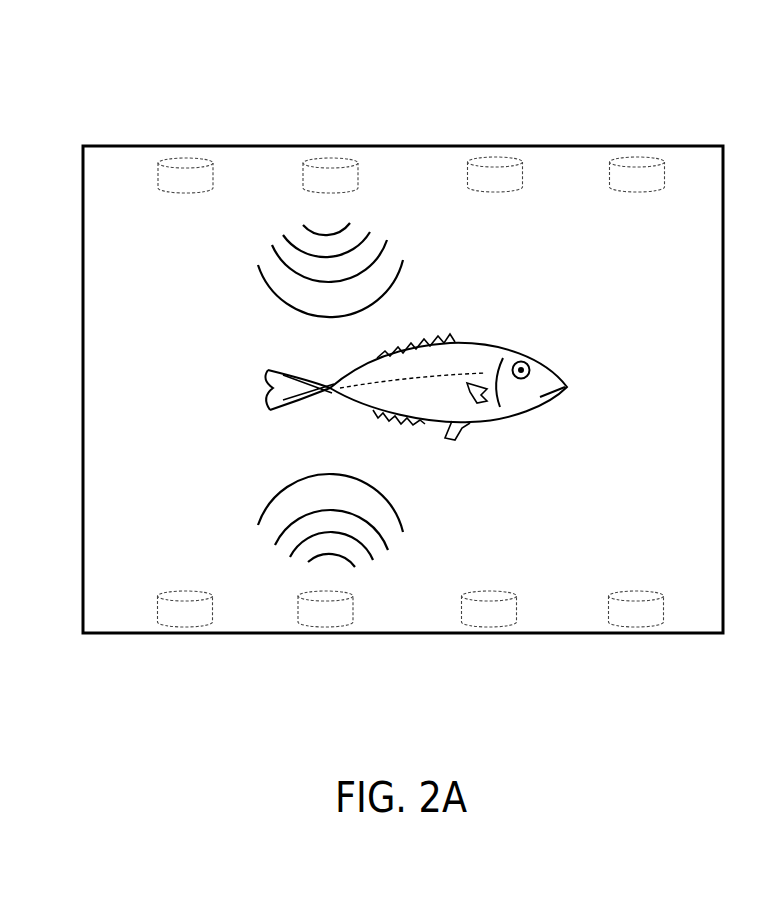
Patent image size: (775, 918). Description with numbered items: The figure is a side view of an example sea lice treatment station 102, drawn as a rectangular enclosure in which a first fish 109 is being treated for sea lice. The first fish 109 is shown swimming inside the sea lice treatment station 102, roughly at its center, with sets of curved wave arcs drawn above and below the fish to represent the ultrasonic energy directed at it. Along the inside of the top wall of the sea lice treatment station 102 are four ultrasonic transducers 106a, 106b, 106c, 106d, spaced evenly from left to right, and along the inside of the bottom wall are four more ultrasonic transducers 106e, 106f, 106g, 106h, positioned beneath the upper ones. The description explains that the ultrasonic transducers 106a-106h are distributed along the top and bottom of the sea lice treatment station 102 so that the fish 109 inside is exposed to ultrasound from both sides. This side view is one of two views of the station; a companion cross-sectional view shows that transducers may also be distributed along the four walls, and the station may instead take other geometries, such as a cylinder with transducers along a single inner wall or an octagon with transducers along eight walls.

The sea lice treatment station 102 is at (149, 74).
The ultrasonic transducer 106a is at (159, 170).
The ultrasonic transducer 106b is at (327, 158).
The ultrasonic transducer 106c is at (495, 154).
The ultrasonic transducer 106d is at (633, 154).
The ultrasonic transducer 106e is at (170, 626).
The ultrasonic transducer 106f is at (325, 628).
The ultrasonic transducer 106g is at (485, 626).
The ultrasonic transducer 106h is at (633, 624).
The first fish 109 is at (528, 415).